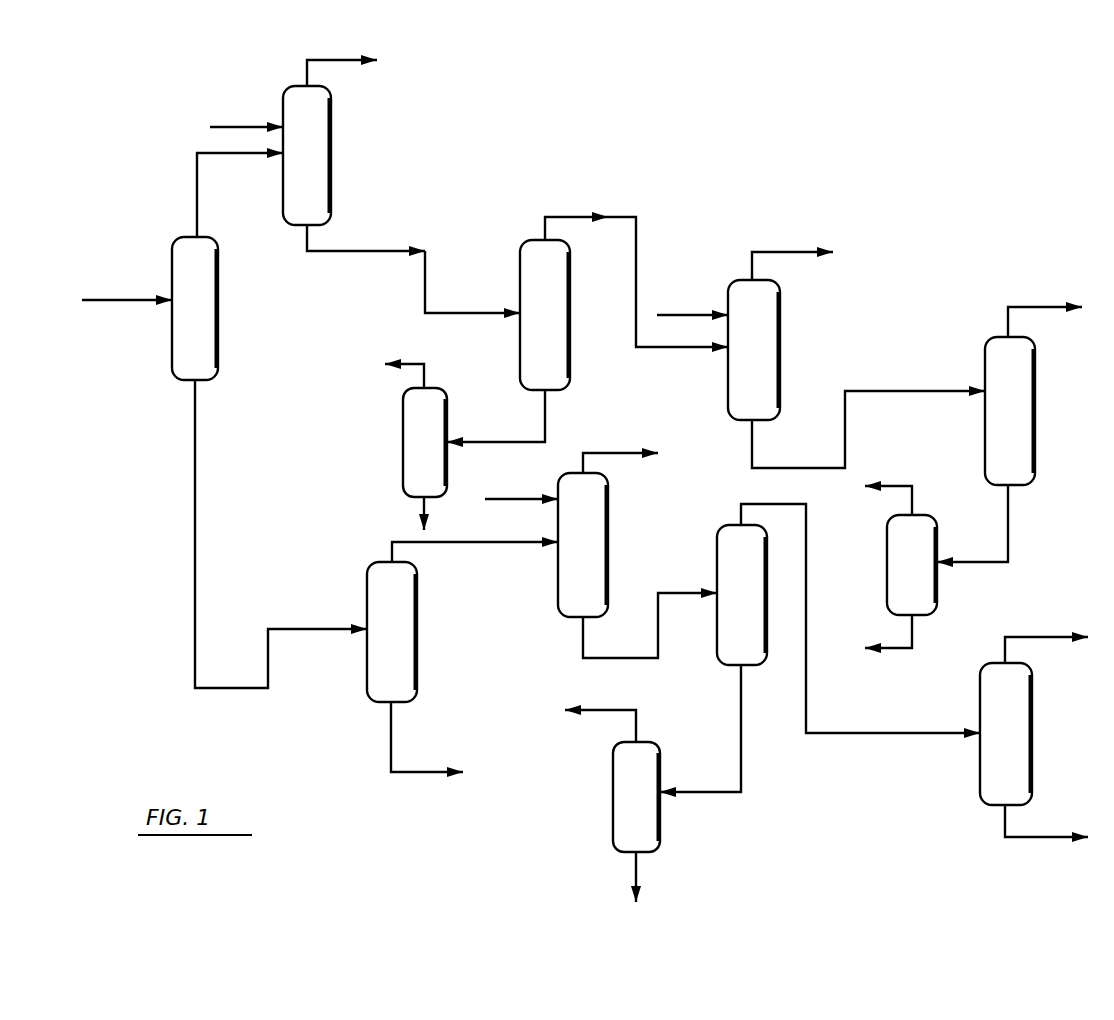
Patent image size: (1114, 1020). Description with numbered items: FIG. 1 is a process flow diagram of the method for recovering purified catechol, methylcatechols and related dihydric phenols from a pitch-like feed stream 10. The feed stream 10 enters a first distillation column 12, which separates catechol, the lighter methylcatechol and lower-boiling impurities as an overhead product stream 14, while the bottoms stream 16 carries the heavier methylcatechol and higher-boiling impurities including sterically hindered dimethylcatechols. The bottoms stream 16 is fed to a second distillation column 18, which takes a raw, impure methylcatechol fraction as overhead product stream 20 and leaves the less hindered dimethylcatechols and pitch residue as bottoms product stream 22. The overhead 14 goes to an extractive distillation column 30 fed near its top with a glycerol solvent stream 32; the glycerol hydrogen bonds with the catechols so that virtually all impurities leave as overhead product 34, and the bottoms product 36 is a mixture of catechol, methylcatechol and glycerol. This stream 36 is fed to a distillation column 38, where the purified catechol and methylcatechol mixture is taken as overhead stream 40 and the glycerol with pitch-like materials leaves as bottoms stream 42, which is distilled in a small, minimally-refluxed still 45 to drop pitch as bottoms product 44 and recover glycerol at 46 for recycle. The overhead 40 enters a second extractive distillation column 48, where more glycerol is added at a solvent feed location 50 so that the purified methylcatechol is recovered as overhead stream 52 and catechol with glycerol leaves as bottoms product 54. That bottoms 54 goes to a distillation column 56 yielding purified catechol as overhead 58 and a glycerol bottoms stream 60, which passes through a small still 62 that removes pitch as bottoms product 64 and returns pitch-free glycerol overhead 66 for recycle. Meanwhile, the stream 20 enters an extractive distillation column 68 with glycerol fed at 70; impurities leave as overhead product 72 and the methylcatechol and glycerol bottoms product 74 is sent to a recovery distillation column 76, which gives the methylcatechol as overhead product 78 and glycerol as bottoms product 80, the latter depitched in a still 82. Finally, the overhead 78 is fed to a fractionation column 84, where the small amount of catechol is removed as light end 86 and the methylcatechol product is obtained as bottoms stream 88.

The feed stream 10 is at (118, 304).
The distillation column 12 is at (205, 322).
The overhead product stream 14 is at (197, 213).
The bottoms stream 16 is at (195, 487).
The second distillation column 18 is at (405, 633).
The overhead product stream 20 is at (490, 542).
The bottoms product stream 22 is at (392, 734).
The extractive distillation column 30 is at (322, 173).
The solvent stream 32 is at (231, 127).
The overhead product 34 is at (338, 61).
The bottoms product 36 is at (351, 252).
The distillation column 38 is at (560, 373).
The overhead stream 40 is at (568, 217).
The bottoms stream 42 is at (545, 414).
The bottoms product 44 is at (425, 506).
The still 45 is at (438, 423).
The recovered glycerol 46 is at (424, 380).
The extractive distillation column 48 is at (767, 336).
The solvent feed location 50 is at (700, 315).
The overhead stream 52 is at (784, 252).
The bottoms product 54 is at (880, 391).
The distillation column 56 is at (1025, 400).
The overhead 58 is at (1030, 307).
The glycerol bottoms stream 60 is at (1010, 534).
The still 62 is at (925, 584).
The bottoms product 64 is at (912, 640).
The overhead 66 is at (912, 500).
The extractive distillation column 68 is at (600, 544).
The glycerol solvent feed 70 is at (494, 499).
The overhead product 72 is at (625, 453).
The bottoms product 74 is at (634, 658).
The recovery distillation column 76 is at (722, 624).
The overhead product 78 is at (806, 560).
The bottoms product 80 is at (741, 770).
The still 82 is at (718, 793).
The fractionation column 84 is at (1020, 746).
The light end 86 is at (1048, 637).
The bottoms stream 88 is at (1042, 837).